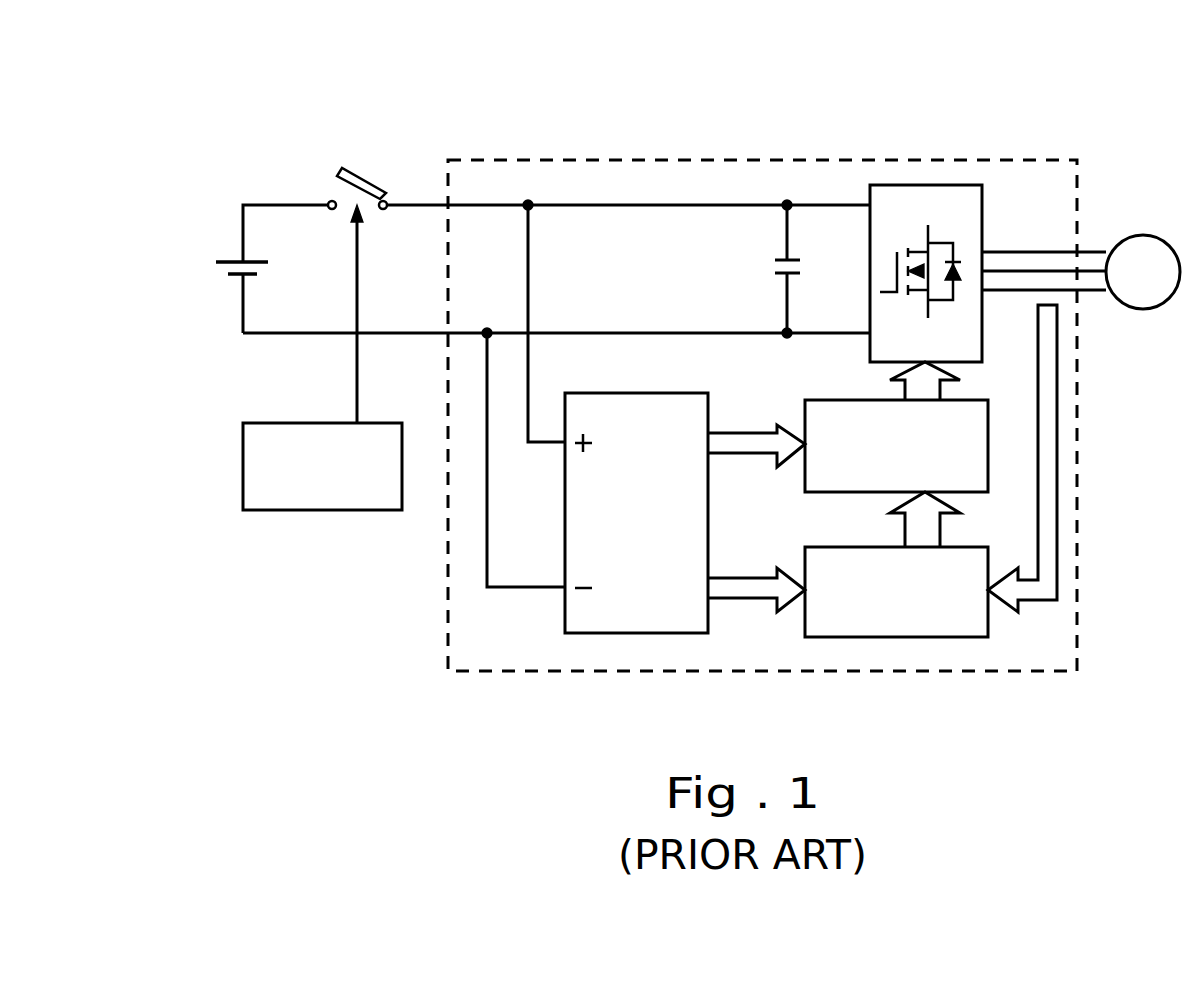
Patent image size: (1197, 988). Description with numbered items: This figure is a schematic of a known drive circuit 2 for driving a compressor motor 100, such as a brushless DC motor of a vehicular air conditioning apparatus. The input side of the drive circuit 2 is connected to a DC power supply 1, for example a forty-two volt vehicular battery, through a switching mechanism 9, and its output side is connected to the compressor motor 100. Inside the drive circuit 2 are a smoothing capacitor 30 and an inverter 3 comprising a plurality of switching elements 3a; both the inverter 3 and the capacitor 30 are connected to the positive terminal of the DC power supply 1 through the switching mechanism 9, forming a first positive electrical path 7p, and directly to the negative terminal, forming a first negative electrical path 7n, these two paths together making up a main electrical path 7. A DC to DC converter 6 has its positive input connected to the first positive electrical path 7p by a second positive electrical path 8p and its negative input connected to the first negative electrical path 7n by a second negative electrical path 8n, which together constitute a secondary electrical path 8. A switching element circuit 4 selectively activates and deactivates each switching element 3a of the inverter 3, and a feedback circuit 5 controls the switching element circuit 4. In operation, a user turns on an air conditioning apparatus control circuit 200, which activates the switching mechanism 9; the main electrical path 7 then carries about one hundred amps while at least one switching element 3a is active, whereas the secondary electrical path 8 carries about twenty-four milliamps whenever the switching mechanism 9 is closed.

The DC power supply 1 is at (232, 256).
The drive circuit 2 is at (677, 185).
The inverter 3 is at (993, 221).
The switching element 3a is at (935, 228).
The switching element circuit 4 is at (815, 400).
The feedback circuit 5 is at (830, 547).
The DC to DC converter 6 is at (596, 393).
The main electrical path 7 is at (556, 269).
The first positive electrical path 7p is at (577, 208).
The first negative electrical path 7n is at (583, 333).
The secondary electrical path 8 is at (526, 434).
The second positive electrical path 8p is at (538, 455).
The second negative electrical path 8n is at (508, 590).
The switching mechanism 9 is at (360, 176).
The smoothing capacitor 30 is at (800, 276).
The compressor motor 100 is at (1160, 235).
The air conditioning apparatus control circuit 200 is at (310, 512).